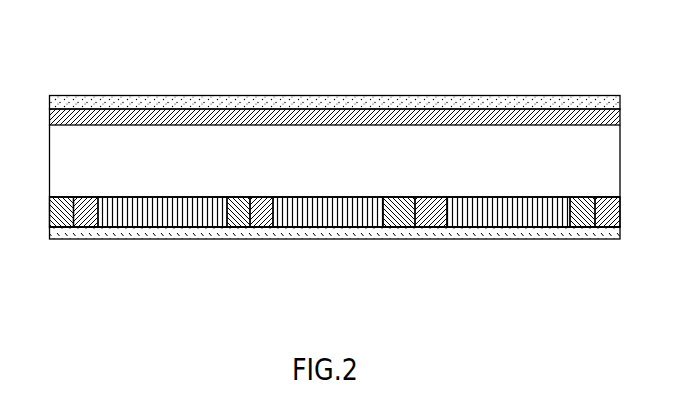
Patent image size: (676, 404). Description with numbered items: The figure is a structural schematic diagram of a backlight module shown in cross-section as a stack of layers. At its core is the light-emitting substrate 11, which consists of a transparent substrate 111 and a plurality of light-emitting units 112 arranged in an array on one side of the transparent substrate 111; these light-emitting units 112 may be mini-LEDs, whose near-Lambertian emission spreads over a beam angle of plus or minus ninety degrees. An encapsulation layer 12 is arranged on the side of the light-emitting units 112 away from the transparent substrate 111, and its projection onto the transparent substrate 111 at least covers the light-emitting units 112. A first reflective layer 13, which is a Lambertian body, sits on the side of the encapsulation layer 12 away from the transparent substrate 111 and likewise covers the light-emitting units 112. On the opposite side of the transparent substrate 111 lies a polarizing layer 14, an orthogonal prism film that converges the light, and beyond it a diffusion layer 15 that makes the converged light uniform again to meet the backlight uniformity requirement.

The light-emitting substrate 11 is at (158, 301).
The transparent substrate 111 is at (123, 178).
The light-emitting units 112 is at (84, 216).
The encapsulation layer 12 is at (392, 222).
The first reflective layer 13 is at (298, 228).
The polarizing layer 14 is at (307, 109).
The diffusion layer 15 is at (208, 100).